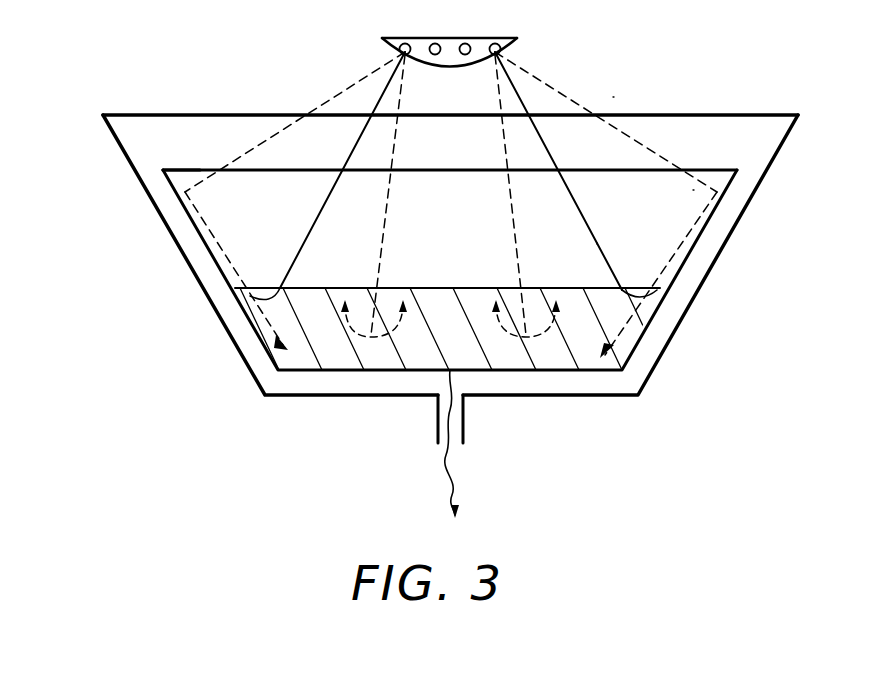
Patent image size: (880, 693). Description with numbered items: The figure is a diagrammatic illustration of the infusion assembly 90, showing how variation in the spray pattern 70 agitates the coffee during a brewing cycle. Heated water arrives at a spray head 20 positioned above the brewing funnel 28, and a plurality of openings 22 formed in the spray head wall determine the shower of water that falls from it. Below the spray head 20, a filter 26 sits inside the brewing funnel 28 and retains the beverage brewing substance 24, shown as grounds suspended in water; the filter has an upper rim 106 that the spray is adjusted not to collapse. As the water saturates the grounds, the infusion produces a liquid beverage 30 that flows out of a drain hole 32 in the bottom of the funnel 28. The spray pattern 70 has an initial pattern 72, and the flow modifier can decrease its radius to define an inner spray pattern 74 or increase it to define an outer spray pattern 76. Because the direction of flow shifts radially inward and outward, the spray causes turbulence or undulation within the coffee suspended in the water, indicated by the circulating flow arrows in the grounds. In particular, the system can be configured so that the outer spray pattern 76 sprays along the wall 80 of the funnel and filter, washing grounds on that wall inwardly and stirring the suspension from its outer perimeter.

The spray head 20 is at (397, 67).
The openings 22 is at (437, 55).
The beverage brewing substance 24 is at (373, 358).
The filter 26 is at (250, 332).
The brewing funnel 28 is at (250, 375).
The liquid beverage 30 is at (445, 468).
The drain hole 32 is at (465, 420).
The spray pattern 70 is at (618, 95).
The initial pattern 72 is at (597, 243).
The inner spray pattern 74 is at (520, 252).
The outer spray pattern 76 is at (658, 152).
The wall 80 is at (693, 190).
The infusion assembly 90 is at (425, 316).
The upper rim 106 is at (175, 168).